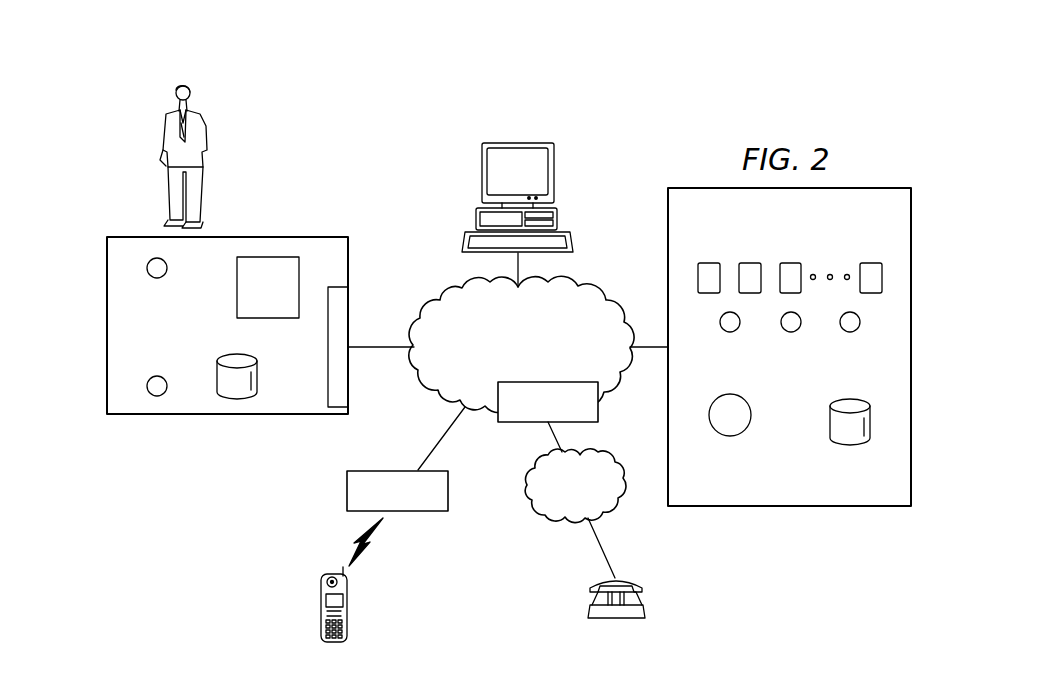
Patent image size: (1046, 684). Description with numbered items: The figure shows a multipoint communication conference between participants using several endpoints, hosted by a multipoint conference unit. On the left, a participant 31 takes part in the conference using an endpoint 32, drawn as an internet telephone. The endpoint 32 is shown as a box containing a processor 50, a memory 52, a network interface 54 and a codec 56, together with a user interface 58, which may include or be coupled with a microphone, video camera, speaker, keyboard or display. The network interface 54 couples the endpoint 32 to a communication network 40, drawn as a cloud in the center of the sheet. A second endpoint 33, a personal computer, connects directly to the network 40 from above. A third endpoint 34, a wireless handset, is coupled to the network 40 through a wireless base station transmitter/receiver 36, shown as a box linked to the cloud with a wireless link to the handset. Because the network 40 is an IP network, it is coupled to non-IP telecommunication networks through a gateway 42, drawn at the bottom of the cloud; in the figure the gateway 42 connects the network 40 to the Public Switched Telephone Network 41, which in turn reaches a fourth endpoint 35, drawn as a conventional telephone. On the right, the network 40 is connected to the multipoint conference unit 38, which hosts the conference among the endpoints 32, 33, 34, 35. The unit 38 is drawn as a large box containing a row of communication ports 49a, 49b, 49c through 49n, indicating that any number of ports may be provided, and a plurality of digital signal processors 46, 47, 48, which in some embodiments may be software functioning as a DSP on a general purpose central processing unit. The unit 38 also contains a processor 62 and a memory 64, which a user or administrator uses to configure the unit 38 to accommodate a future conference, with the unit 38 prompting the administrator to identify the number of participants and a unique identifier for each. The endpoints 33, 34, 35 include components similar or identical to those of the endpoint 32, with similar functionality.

The participant 31 is at (162, 126).
The endpoint 32 is at (218, 416).
The endpoint 33 is at (482, 172).
The endpoint 34 is at (320, 614).
The endpoint 35 is at (645, 612).
The wireless base station transmitter/receiver 36 is at (347, 490).
The multipoint conference unit 38 is at (808, 507).
The communication network 40 is at (448, 298).
The Public Switched Telephone Network 41 is at (545, 519).
The gateway 42 is at (598, 413).
The digital signal processor 46 is at (730, 333).
The digital signal processor 47 is at (791, 333).
The digital signal processor 48 is at (850, 333).
The communication port 49a is at (709, 262).
The communication port 49b is at (750, 262).
The communication port 49c is at (790, 262).
The communication port 49n is at (871, 262).
The processor 50 is at (158, 376).
The memory 52 is at (258, 377).
The network interface 54 is at (340, 316).
The codec 56 is at (158, 278).
The user interface 58 is at (268, 287).
The processor 62 is at (730, 437).
The memory 64 is at (850, 442).